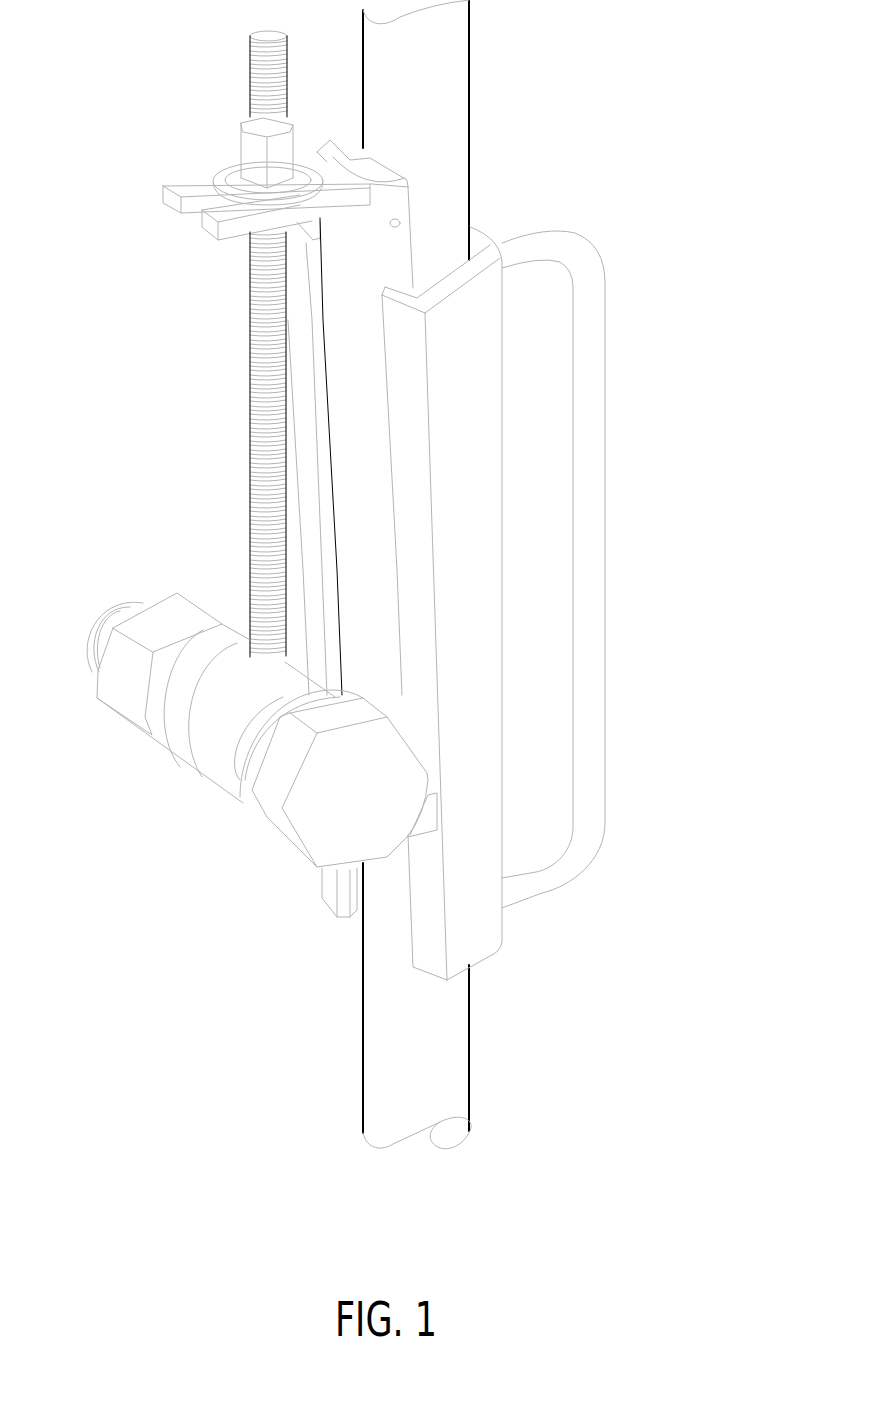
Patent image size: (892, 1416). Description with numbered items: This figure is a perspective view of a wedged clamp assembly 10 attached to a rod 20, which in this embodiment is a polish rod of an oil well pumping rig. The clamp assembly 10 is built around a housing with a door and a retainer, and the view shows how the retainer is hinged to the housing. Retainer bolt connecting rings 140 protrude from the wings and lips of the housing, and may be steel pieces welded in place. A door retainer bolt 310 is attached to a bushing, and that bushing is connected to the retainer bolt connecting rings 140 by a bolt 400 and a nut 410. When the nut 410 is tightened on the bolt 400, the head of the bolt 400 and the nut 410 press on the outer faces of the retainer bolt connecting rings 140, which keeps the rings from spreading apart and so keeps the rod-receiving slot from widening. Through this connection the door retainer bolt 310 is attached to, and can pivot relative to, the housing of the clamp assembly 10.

The wedged clamp assembly 10 is at (643, 189).
The rod 20 is at (437, 40).
The retainer bolt connecting rings 140 is at (158, 732).
The door retainer bolt 310 is at (260, 277).
The bolt 400 is at (95, 597).
The nut 410 is at (163, 608).